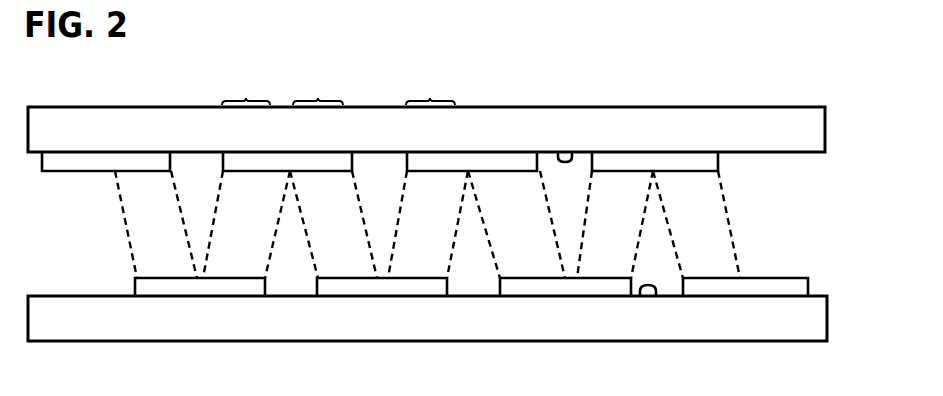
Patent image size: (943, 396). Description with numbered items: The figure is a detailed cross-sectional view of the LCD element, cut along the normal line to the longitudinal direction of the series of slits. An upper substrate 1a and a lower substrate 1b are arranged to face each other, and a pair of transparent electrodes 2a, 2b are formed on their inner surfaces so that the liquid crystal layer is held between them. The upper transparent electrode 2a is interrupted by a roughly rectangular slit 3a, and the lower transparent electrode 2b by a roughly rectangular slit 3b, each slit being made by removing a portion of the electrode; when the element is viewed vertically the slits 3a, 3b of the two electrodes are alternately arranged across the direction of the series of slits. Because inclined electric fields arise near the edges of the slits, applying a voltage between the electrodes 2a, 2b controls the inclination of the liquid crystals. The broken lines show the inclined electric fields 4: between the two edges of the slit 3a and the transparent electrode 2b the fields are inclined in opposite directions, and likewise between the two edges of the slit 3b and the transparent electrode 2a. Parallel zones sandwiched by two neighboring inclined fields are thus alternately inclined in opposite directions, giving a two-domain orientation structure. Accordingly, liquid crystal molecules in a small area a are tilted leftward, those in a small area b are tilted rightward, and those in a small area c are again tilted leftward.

The upper substrate 1a is at (781, 106).
The lower substrate 1b is at (780, 333).
The transparent electrode 2a is at (677, 158).
The transparent electrode 2b is at (731, 290).
The slit 3a is at (566, 156).
The slit 3b is at (640, 296).
The inclined electric field 4 is at (732, 216).
The small area a is at (246, 92).
The small area b is at (318, 91).
The small area c is at (430, 92).